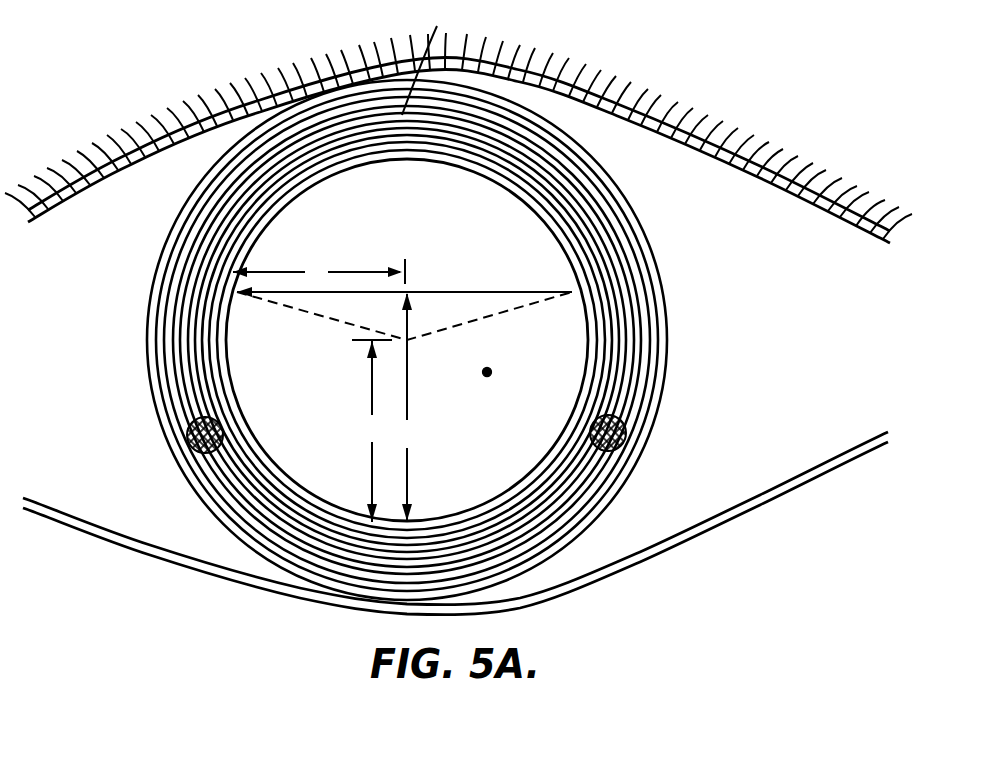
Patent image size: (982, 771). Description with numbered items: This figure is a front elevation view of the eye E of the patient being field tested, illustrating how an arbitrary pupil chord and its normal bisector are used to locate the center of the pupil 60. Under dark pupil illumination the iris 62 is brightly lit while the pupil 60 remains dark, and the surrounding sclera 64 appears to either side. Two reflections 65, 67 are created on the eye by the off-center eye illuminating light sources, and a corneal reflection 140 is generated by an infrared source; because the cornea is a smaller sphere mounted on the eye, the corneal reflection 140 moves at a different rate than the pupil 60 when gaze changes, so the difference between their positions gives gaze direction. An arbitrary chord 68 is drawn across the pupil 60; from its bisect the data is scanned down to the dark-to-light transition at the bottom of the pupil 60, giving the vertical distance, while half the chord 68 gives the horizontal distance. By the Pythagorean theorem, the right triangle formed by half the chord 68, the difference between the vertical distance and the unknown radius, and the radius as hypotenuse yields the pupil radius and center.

The eye E is at (722, 116).
The pupil 60 is at (492, 462).
The iris 62 is at (550, 160).
The sclera 64 is at (73, 357).
The reflection 65 is at (188, 443).
The reflection 67 is at (627, 437).
The chord 68 is at (392, 296).
The corneal reflection 140 is at (498, 366).